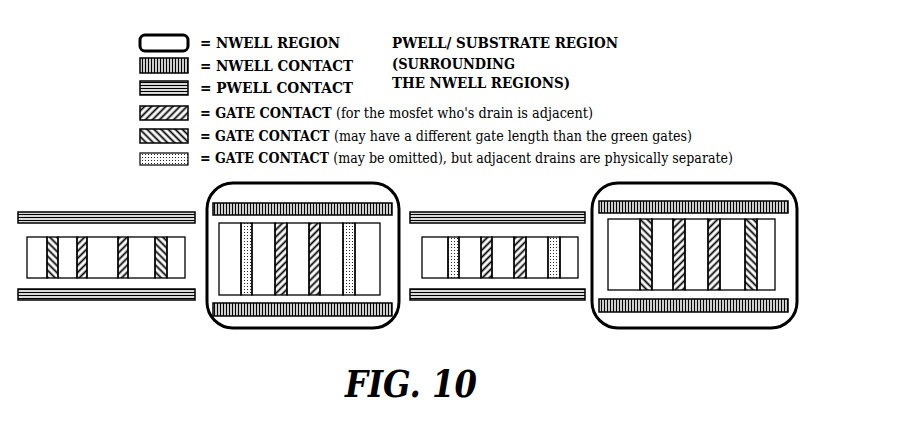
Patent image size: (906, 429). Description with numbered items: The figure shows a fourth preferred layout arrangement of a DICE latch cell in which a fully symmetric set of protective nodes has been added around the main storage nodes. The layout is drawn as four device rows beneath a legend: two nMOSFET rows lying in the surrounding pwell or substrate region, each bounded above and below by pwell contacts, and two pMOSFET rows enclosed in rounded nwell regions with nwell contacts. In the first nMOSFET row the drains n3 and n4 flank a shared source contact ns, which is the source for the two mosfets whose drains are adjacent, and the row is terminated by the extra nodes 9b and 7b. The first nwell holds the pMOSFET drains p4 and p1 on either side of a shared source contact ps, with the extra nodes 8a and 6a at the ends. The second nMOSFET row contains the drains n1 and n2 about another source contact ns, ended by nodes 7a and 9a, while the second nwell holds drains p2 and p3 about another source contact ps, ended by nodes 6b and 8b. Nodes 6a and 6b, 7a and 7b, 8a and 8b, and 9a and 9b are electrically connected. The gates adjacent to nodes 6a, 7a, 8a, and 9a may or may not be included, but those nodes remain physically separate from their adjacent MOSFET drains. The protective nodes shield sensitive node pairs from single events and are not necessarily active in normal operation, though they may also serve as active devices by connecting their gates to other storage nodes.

The protective node 9b is at (37, 257).
The nMOSFET drain n3 is at (67, 257).
The nMOSFET source contact ns is at (300, 257).
The nMOSFET drain n4 is at (141, 257).
The protective node 7b is at (176, 257).
The protective node 8a is at (230, 259).
The pMOSFET drain p4 is at (263, 259).
The pMOSFET source contact ps is at (497, 257).
The pMOSFET drain p1 is at (331, 259).
The protective node 6a is at (367, 259).
The protective node 7a is at (435, 257).
The nMOSFET drain n1 is at (470, 257).
The nMOSFET drain n2 is at (537, 257).
The protective node 9a is at (569, 257).
The protective node 6b is at (624, 254).
The pMOSFET drain p2 is at (662, 254).
The pMOSFET drain p3 is at (732, 254).
The protective node 8b is at (766, 254).